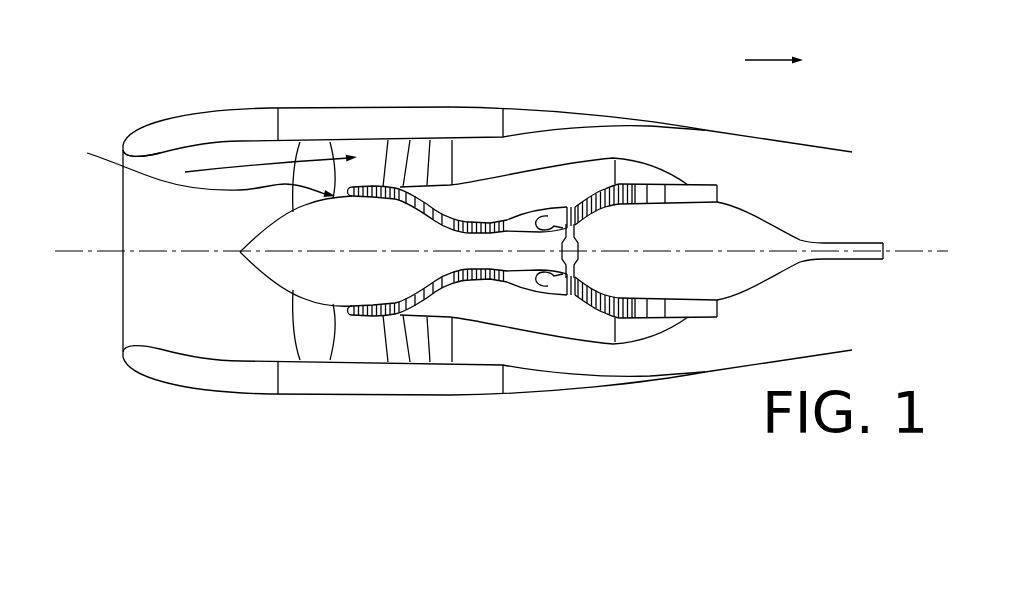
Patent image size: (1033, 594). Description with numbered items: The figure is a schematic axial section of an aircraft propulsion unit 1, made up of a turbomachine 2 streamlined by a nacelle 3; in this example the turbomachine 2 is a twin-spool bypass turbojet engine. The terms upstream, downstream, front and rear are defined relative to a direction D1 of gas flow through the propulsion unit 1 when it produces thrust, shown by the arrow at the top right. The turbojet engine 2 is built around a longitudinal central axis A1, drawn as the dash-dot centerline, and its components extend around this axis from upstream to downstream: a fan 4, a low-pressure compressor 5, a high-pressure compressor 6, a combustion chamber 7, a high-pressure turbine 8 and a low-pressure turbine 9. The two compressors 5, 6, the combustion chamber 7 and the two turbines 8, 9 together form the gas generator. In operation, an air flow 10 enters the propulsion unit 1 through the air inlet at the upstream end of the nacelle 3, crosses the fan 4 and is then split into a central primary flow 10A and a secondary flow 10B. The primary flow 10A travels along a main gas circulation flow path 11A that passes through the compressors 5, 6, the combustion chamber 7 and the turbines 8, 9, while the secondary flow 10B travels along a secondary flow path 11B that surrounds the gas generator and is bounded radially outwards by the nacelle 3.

The aircraft propulsion unit 1 is at (276, 66).
The turbomachine 2 is at (737, 189).
The nacelle 3 is at (398, 118).
The fan 4 is at (303, 317).
The low-pressure compressor 5 is at (367, 180).
The high-pressure compressor 6 is at (485, 210).
The combustion chamber 7 is at (542, 202).
The high-pressure turbine 8 is at (571, 200).
The low-pressure turbine 9 is at (638, 178).
The air flow 10 is at (207, 166).
The primary flow 10A is at (182, 165).
The secondary flow 10B is at (318, 160).
The main gas circulation flow path 11A is at (437, 288).
The secondary flow path 11B is at (548, 355).
The longitudinal central axis A1 is at (68, 250).
The direction of gas flow D1 is at (772, 60).